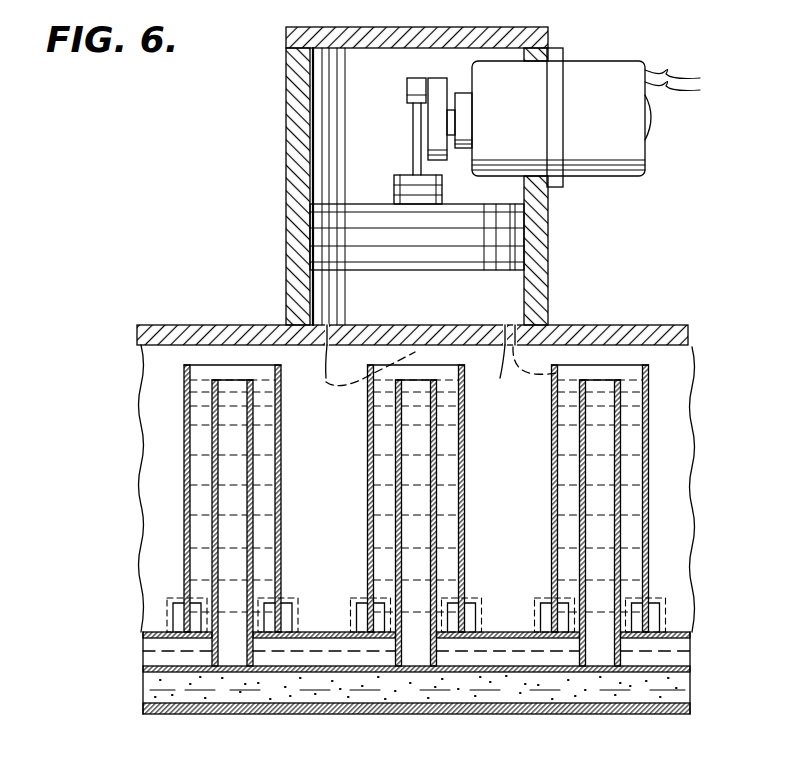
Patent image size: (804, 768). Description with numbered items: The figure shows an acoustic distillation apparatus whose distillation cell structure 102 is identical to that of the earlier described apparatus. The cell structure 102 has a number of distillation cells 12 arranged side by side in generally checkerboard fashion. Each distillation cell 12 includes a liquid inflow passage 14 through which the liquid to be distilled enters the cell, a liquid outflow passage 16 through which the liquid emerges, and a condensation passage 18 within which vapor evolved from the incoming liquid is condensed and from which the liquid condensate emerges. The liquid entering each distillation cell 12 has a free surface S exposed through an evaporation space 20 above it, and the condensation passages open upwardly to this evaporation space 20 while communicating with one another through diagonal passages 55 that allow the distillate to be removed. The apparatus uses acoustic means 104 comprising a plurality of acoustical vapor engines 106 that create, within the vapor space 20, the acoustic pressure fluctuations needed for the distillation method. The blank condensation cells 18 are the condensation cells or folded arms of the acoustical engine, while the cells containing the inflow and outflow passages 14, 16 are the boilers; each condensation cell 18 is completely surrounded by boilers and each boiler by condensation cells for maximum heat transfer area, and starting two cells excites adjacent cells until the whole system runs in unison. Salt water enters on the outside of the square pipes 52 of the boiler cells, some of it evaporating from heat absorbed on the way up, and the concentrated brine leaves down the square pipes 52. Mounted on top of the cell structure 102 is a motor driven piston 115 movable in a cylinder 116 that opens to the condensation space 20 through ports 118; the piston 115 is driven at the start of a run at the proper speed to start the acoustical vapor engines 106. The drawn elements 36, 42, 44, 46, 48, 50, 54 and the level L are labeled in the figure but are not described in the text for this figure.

The distillation cell 12 is at (239, 360).
The liquid inflow passage 14 is at (186, 520).
The liquid outflow passage 16 is at (232, 455).
The condensation passage 18 is at (160, 433).
The evaporation space 20 is at (195, 347).
The bottom plate 36 is at (388, 714).
The passage 42 is at (276, 672).
The channel 44 is at (503, 640).
The liquid level 46 is at (190, 388).
The gas space 48 is at (675, 372).
The partition plate 50 is at (141, 655).
The square pipe 52 is at (250, 430).
The chamber 54 is at (160, 688).
The diagonal passage 55 is at (545, 601).
The distillation cell structure 102 is at (141, 478).
The acoustic means 104 is at (235, 321).
The acoustical vapor engine 106 is at (535, 368).
The piston 115 is at (330, 230).
The cylinder 116 is at (290, 135).
The port 118 is at (421, 372).
The liquid level L is at (672, 652).
The free surface S is at (200, 380).